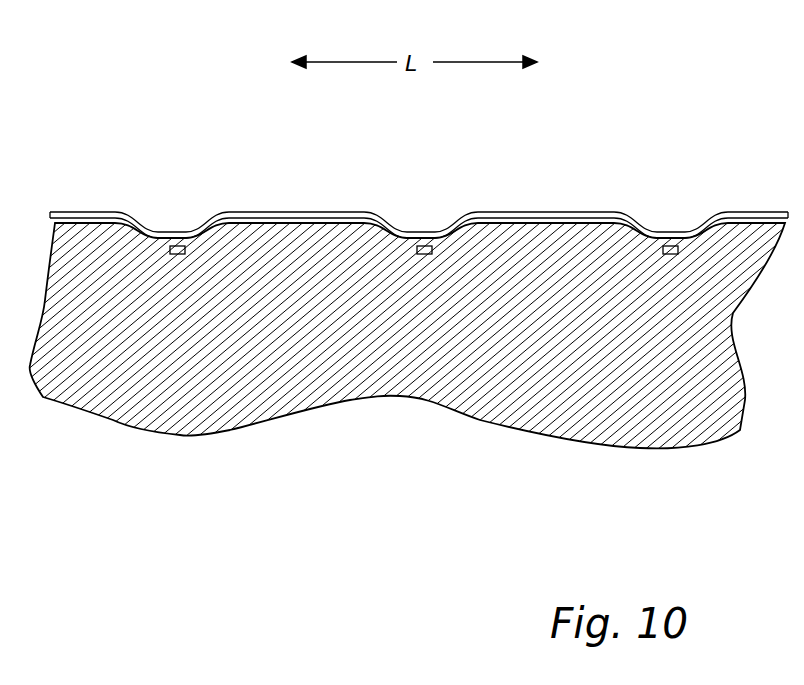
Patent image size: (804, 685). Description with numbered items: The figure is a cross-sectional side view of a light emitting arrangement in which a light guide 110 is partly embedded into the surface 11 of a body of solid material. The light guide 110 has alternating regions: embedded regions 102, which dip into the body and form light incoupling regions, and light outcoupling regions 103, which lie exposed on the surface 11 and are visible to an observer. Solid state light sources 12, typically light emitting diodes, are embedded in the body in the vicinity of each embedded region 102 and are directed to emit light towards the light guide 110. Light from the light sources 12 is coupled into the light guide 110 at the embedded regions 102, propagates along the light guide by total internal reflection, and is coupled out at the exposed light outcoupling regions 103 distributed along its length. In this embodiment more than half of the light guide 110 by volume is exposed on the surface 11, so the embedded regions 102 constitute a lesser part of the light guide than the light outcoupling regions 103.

The surface 11 is at (173, 222).
The solid state light sources 12 is at (178, 255).
The embedded regions 102 is at (150, 247).
The light outcoupling regions 103 is at (88, 203).
The light guide 110 is at (367, 217).